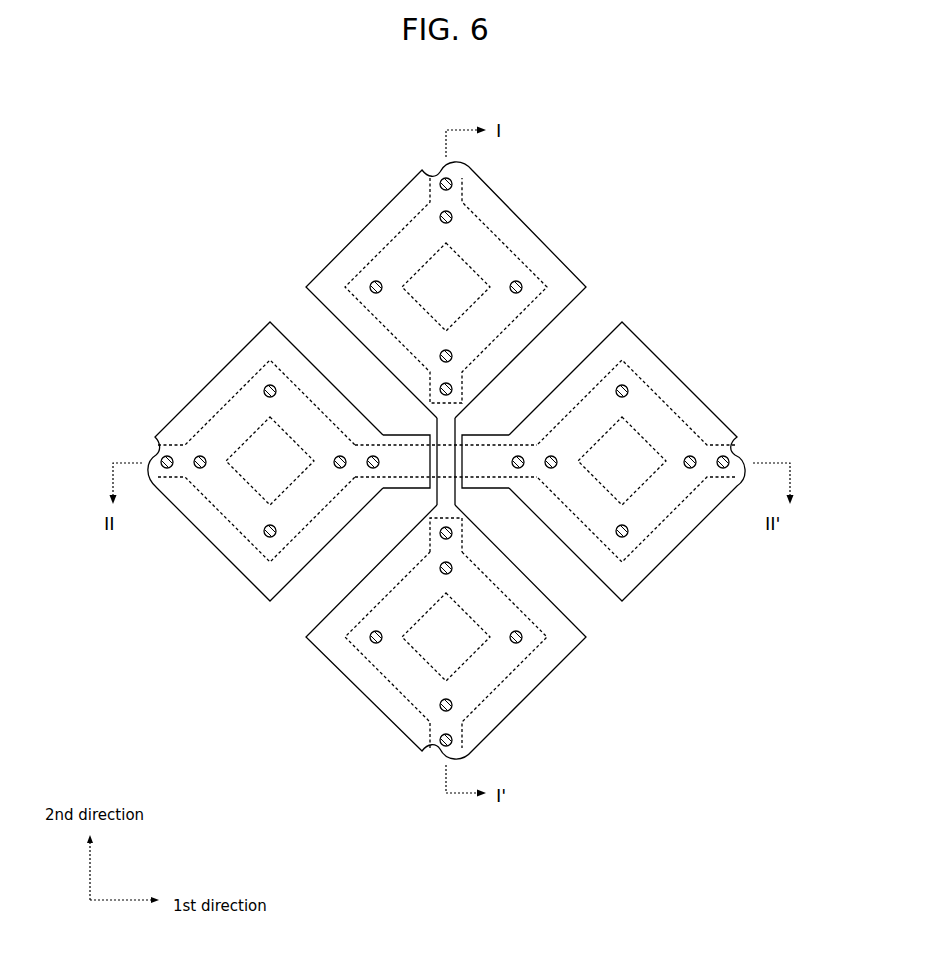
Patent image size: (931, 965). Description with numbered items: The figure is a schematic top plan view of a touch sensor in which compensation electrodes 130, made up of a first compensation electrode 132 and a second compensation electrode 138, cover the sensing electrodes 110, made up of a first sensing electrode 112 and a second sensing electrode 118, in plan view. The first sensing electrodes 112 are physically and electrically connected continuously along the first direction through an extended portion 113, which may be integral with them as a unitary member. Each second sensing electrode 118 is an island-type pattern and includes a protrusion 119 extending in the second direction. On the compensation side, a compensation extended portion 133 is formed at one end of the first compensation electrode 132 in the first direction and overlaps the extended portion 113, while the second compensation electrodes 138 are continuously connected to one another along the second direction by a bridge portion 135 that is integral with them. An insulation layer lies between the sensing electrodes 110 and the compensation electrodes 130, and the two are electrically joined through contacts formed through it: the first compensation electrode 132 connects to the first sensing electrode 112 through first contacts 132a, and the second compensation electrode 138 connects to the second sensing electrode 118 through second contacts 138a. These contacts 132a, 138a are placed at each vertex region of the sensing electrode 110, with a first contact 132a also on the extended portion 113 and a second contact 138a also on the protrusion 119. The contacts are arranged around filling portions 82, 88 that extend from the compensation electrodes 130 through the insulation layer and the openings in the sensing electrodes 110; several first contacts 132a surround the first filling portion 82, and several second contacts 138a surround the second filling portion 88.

The first filling portion 82 is at (247, 452).
The second filling portion 88 is at (420, 282).
The sensing electrodes 110 is at (582, 554).
The first sensing electrode 112 is at (636, 461).
The extended portion 113 is at (410, 452).
The second sensing electrode 118 is at (446, 650).
The protrusion 119 is at (462, 532).
The compensation electrodes 130 is at (323, 540).
The first compensation electrode 132 is at (265, 461).
The first contact 132a is at (269, 386).
The compensation extended portion 133 is at (486, 443).
The bridge portion 135 is at (466, 492).
The second compensation electrode 138 is at (446, 632).
The second contact 138a is at (515, 283).